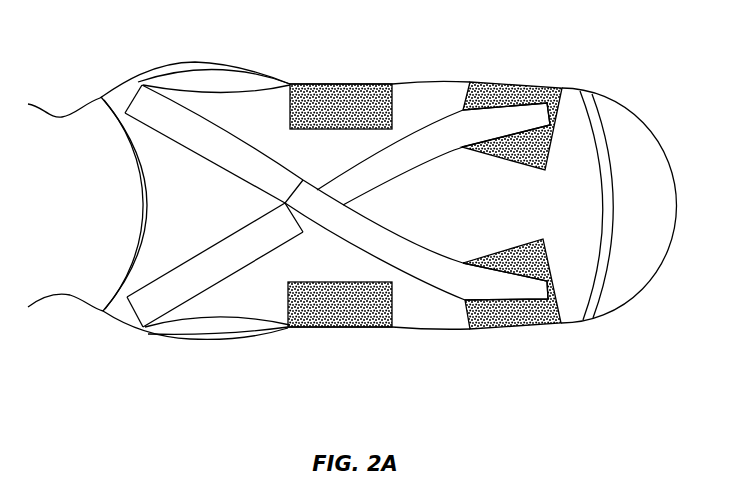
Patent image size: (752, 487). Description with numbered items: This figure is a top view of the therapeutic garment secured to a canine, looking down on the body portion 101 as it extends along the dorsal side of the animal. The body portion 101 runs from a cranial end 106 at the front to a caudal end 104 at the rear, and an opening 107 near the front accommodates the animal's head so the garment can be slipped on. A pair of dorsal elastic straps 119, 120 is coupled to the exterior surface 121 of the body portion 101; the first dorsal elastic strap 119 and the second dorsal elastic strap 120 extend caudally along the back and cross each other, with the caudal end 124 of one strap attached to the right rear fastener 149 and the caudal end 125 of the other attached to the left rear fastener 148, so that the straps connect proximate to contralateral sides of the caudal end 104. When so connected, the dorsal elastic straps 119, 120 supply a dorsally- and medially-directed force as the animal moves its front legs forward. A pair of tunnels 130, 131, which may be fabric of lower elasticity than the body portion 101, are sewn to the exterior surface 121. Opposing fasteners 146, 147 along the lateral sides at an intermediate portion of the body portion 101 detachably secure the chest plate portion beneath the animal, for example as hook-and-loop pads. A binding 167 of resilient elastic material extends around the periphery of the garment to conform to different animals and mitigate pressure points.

The body portion 101 is at (318, 163).
The caudal end 104 is at (595, 192).
The cranial end 106 is at (140, 182).
The opening 107 is at (122, 275).
The first dorsal elastic strap 119 is at (445, 137).
The second dorsal elastic strap 120 is at (445, 275).
The exterior surface 121 is at (477, 216).
The caudal end 124 is at (525, 115).
The caudal end 125 is at (526, 298).
The first tunnel 130 is at (213, 268).
The second tunnel 131 is at (215, 142).
The fastener 146 is at (338, 320).
The fastener 147 is at (338, 102).
The left rear fastener 148 is at (498, 327).
The right rear fastener 149 is at (497, 84).
The binding 167 is at (606, 226).